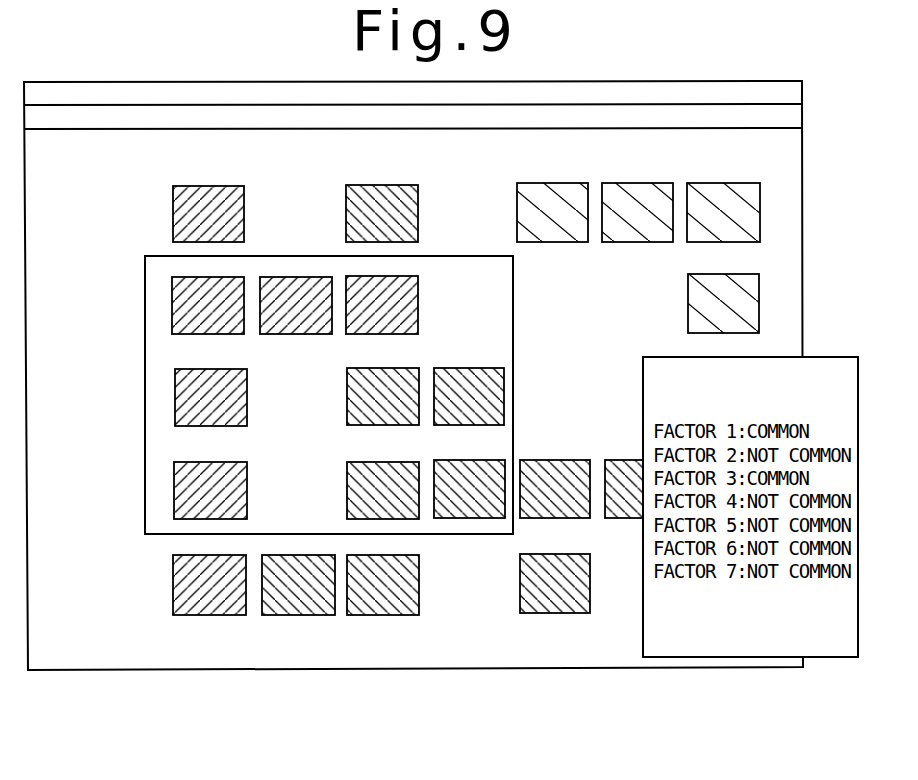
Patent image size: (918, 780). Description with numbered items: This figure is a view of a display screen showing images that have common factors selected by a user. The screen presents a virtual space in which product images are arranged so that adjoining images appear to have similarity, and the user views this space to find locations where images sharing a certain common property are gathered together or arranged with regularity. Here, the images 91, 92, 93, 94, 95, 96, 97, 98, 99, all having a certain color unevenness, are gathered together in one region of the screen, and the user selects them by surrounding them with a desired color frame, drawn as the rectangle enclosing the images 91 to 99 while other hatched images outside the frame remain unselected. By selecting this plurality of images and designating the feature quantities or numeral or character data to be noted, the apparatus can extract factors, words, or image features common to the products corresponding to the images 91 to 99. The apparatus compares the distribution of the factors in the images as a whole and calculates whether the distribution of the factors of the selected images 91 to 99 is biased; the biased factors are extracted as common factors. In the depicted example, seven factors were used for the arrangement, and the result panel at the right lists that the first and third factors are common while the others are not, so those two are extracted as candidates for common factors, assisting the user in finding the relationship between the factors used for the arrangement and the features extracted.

The image 91 is at (188, 303).
The image 92 is at (293, 298).
The image 93 is at (402, 307).
The image 94 is at (190, 399).
The image 95 is at (368, 397).
The image 96 is at (464, 388).
The image 97 is at (198, 486).
The image 98 is at (370, 486).
The image 99 is at (476, 481).